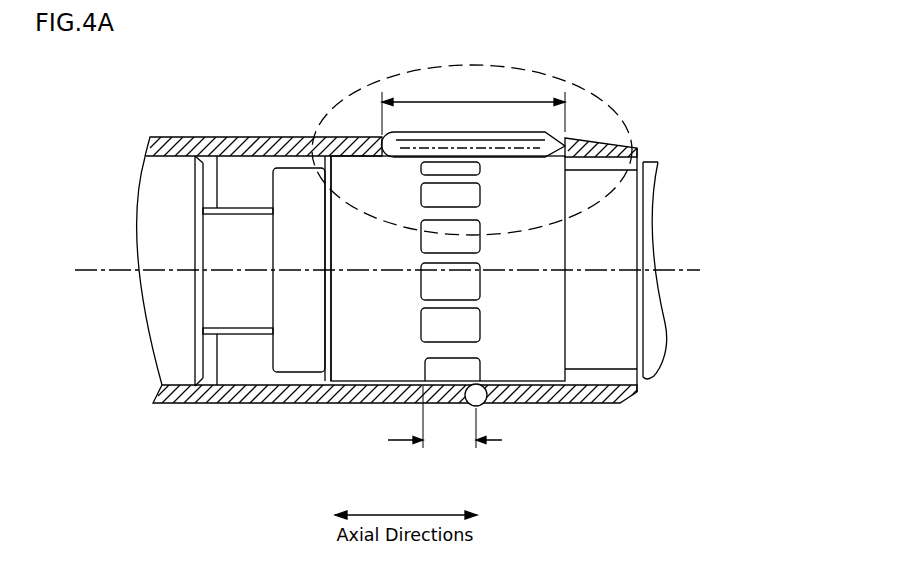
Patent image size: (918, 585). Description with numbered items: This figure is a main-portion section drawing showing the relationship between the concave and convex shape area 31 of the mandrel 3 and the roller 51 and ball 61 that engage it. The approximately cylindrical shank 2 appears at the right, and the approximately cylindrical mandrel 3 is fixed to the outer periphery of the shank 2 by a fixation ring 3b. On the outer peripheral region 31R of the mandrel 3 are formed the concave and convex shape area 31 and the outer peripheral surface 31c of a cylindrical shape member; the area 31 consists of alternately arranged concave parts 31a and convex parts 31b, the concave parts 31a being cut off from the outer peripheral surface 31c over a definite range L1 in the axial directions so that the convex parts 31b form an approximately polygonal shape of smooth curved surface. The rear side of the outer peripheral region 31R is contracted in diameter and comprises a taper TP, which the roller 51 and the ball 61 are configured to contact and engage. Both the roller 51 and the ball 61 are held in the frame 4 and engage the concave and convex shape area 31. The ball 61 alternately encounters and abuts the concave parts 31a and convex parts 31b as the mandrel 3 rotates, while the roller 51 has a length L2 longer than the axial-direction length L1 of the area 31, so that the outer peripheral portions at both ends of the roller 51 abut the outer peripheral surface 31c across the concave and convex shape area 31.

The shank 2 is at (617, 225).
The mandrel 3 is at (445, 269).
The fixation ring 3b is at (297, 183).
The frame 4 is at (202, 140).
The concave and convex shape area 31 is at (422, 296).
The concave parts 31a is at (421, 329).
The convex parts 31b is at (481, 258).
The outer peripheral surface 31c is at (343, 235).
The outer peripheral region 31R is at (420, 315).
The roller 51 is at (437, 123).
The ball 61 is at (480, 405).
The taper TP is at (358, 137).
The axial-direction length of the concave and convex shape area L1 is at (445, 429).
The roller length L2 is at (473, 105).